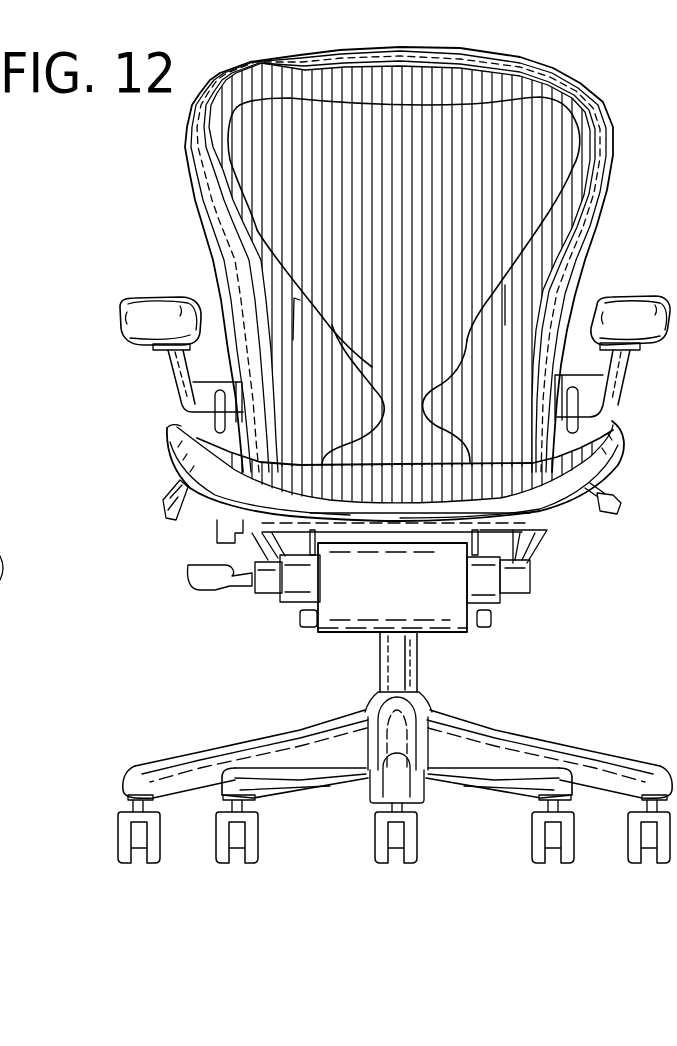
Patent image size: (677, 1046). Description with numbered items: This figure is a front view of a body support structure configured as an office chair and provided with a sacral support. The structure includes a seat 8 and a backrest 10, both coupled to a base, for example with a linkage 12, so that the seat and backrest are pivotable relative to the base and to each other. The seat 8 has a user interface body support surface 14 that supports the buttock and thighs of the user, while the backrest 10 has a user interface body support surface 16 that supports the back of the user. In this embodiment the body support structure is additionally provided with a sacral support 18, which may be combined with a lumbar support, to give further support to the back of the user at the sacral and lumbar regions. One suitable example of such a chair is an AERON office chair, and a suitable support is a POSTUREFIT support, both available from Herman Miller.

The seat 8 is at (213, 507).
The backrest 10 is at (176, 147).
The linkage 12 is at (540, 545).
The user interface body support surface 14 is at (293, 480).
The user interface body support surface 16 is at (267, 187).
The sacral support 18 is at (373, 367).